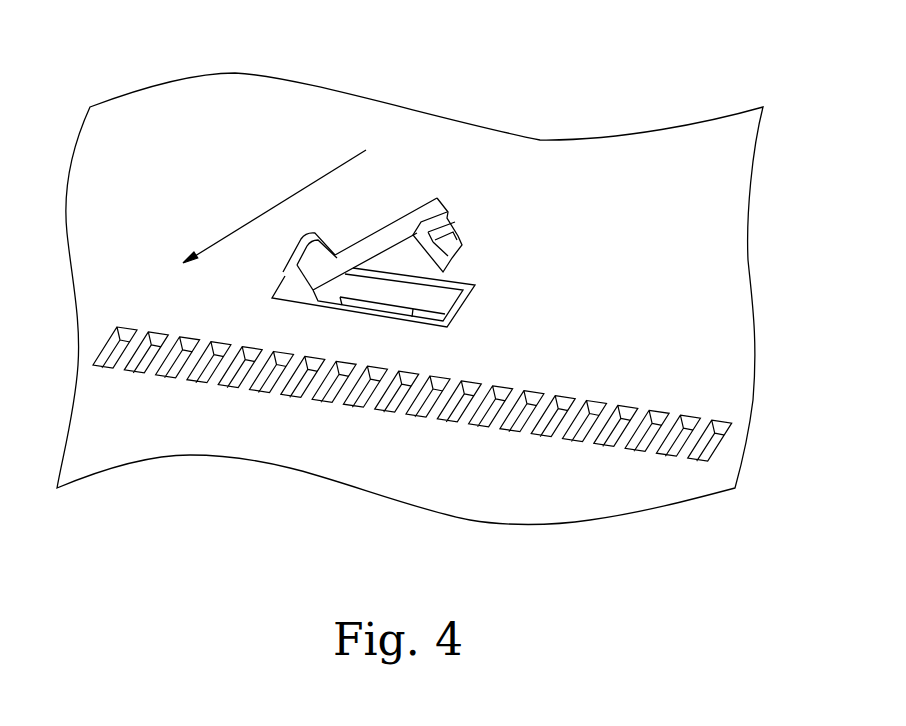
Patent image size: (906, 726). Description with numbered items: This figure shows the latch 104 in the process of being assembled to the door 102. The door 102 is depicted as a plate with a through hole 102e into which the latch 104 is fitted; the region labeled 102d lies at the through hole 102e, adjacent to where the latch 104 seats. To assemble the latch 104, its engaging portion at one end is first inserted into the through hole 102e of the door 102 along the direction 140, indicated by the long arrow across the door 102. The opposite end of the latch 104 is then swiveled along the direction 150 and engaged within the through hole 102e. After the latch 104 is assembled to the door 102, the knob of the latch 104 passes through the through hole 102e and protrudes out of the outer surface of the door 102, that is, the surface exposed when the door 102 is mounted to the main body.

The door 102 is at (186, 157).
The pad of recess 102d is at (367, 307).
The through hole 102e is at (418, 323).
The latch 104 is at (433, 175).
The direction 140 is at (287, 195).
The direction 150 is at (494, 285).